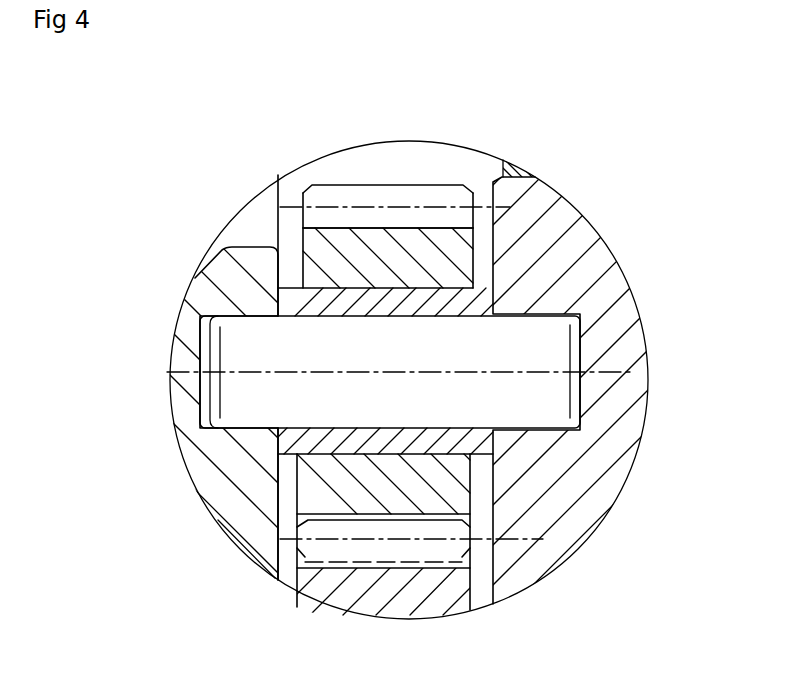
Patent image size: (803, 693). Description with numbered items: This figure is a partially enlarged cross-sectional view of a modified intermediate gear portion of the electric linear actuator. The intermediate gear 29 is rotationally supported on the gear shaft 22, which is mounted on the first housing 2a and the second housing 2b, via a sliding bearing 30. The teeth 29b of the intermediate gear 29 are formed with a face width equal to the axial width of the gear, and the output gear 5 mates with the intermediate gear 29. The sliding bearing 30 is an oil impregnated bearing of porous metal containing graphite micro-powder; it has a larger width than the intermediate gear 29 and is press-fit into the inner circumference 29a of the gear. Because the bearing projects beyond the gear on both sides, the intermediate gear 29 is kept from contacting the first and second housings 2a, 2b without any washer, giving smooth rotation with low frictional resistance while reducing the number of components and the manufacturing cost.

The first housing 2a is at (225, 278).
The second housing 2b is at (572, 270).
The output gear 5 is at (430, 594).
The gear shaft 22 is at (223, 383).
The intermediate gear 29 is at (410, 160).
The inner circumference 29a is at (306, 316).
The teeth 29b is at (368, 197).
The sliding bearing 30 is at (493, 446).